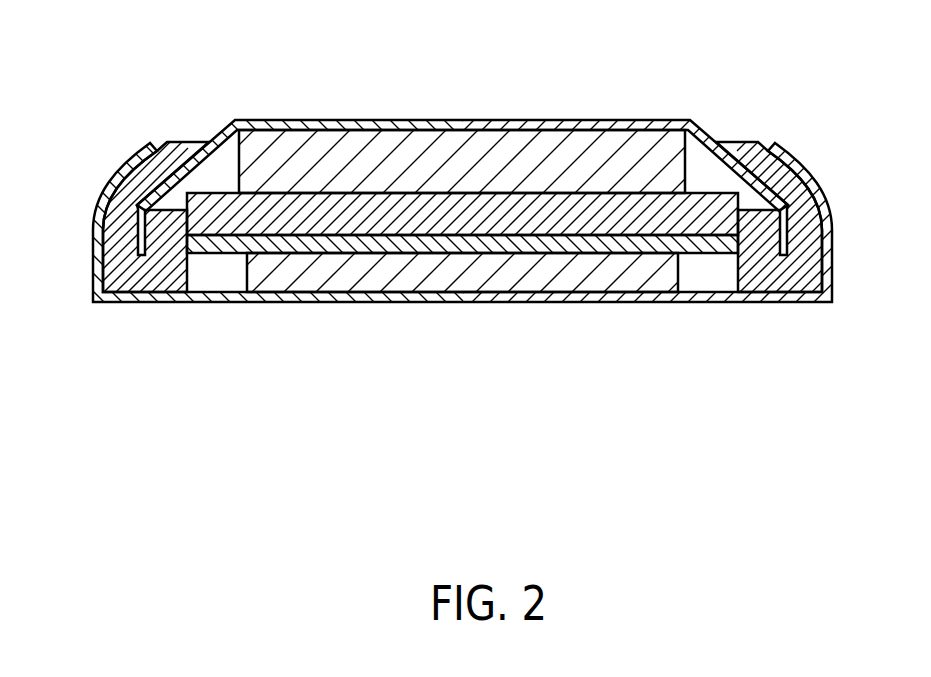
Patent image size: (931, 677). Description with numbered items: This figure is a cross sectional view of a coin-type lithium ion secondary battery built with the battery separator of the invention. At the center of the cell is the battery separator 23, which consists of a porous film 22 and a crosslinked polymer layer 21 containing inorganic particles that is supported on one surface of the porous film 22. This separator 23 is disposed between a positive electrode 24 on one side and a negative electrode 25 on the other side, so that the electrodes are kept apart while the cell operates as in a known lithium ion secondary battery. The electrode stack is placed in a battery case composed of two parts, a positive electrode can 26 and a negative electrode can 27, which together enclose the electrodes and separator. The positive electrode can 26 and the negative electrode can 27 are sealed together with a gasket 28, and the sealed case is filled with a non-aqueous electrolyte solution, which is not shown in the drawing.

The crosslinked polymer layer 21 is at (436, 243).
The porous film 22 is at (492, 232).
The battery separator 23 is at (522, 418).
The positive electrode 24 is at (335, 272).
The negative electrode 25 is at (290, 155).
The positive electrode can 26 is at (703, 295).
The negative electrode can 27 is at (453, 126).
The gasket 28 is at (143, 172).